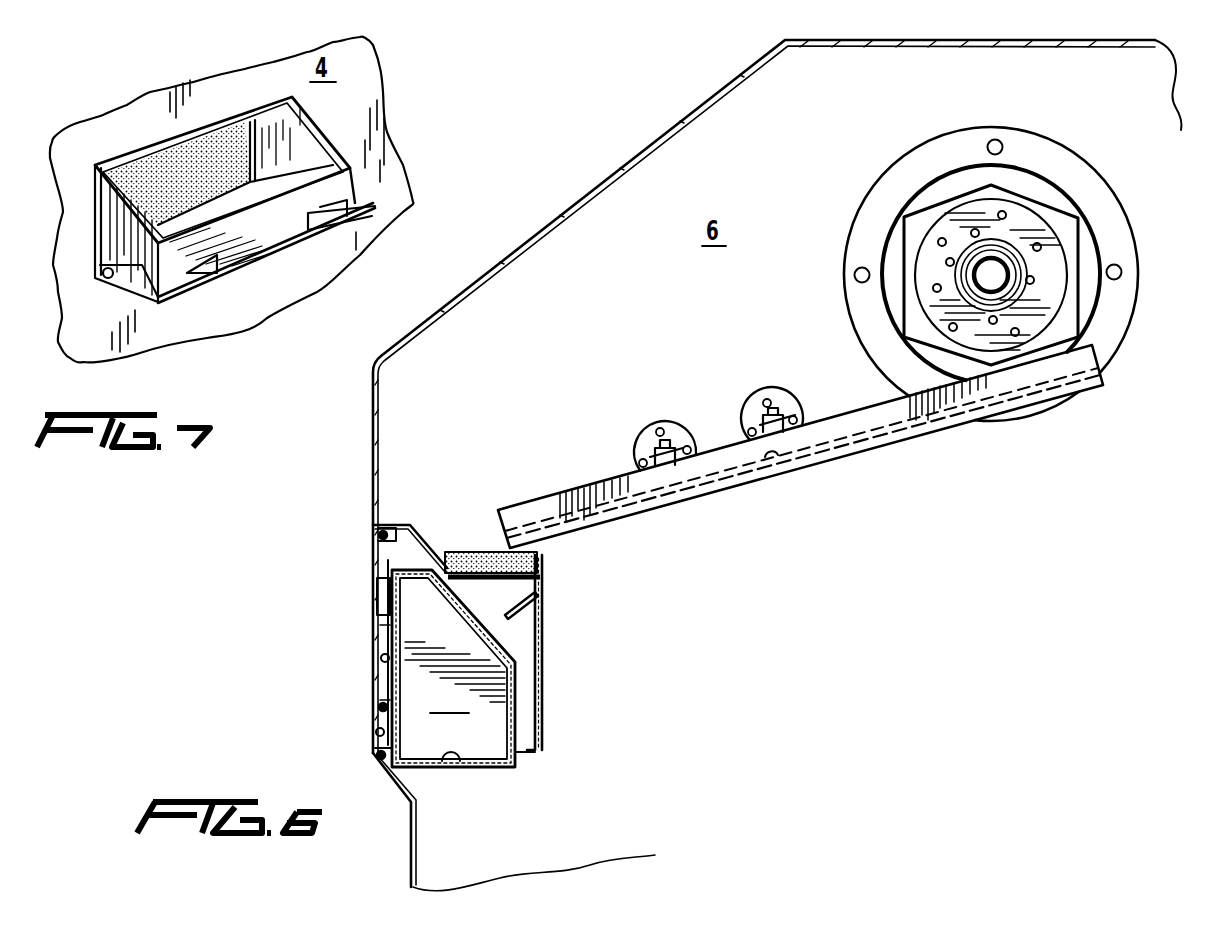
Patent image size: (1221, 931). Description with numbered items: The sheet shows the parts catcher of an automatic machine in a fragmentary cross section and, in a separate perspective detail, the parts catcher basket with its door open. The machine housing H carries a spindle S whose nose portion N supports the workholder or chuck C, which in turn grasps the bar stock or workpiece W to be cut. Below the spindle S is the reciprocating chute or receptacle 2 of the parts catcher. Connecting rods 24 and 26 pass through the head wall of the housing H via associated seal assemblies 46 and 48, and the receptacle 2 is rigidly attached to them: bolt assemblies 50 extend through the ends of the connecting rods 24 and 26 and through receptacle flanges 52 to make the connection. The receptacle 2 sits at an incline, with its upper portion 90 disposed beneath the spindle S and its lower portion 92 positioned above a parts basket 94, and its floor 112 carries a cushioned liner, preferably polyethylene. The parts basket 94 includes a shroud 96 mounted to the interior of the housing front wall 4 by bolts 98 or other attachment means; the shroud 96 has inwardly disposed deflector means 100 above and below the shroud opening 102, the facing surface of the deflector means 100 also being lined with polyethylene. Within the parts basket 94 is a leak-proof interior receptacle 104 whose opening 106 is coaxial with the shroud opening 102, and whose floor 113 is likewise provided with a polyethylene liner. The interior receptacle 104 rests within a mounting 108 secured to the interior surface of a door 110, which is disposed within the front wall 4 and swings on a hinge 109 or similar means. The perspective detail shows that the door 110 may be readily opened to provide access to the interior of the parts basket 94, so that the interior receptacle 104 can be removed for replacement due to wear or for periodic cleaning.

In FIG. 6, the receptacle 2 is at (905, 458).
In FIG. 6, the front wall 4 is at (372, 470).
In FIG. 6, the connecting rod 24 is at (684, 440).
In FIG. 6, the connecting rod 26 is at (805, 412).
In FIG. 6, the seal assembly 46 is at (647, 432).
In FIG. 6, the seal assembly 48 is at (768, 400).
In FIG. 6, the bolt assemblies 50 is at (668, 428).
In FIG. 6, the receptacle flanges 52 is at (665, 463).
In FIG. 6, the upper portion 90 is at (1013, 392).
In FIG. 6, the lower portion 92 is at (567, 512).
In FIG. 7, the parts basket 94 is at (380, 170).
In FIG. 6, the parts basket 94 is at (572, 697).
In FIG. 6, the shroud 96 is at (546, 675).
In FIG. 6, the bolts 98 is at (378, 535).
In FIG. 6, the deflector means 100 is at (478, 555).
In FIG. 6, the shroud opening 102 is at (495, 582).
In FIG. 7, the interior receptacle 104 is at (318, 170).
In FIG. 6, the interior receptacle 104 is at (453, 668).
In FIG. 6, the opening 106 is at (455, 598).
In FIG. 7, the mounting 108 is at (275, 237).
In FIG. 6, the mounting 108 is at (520, 750).
In FIG. 7, the hinge 109 is at (118, 290).
In FIG. 6, the hinge 109 is at (376, 710).
In FIG. 7, the door 110 is at (330, 222).
In FIG. 6, the door 110 is at (370, 660).
In FIG. 6, the floor 112 is at (772, 462).
In FIG. 7, the floor 113 is at (205, 150).
In FIG. 6, the floor 113 is at (455, 772).
In FIG. 6, the housing H is at (636, 150).
In FIG. 6, the spindle S is at (884, 168).
In FIG. 6, the workpiece W is at (992, 268).
In FIG. 6, the nose portion N is at (1062, 205).
In FIG. 6, the chuck C is at (1025, 270).